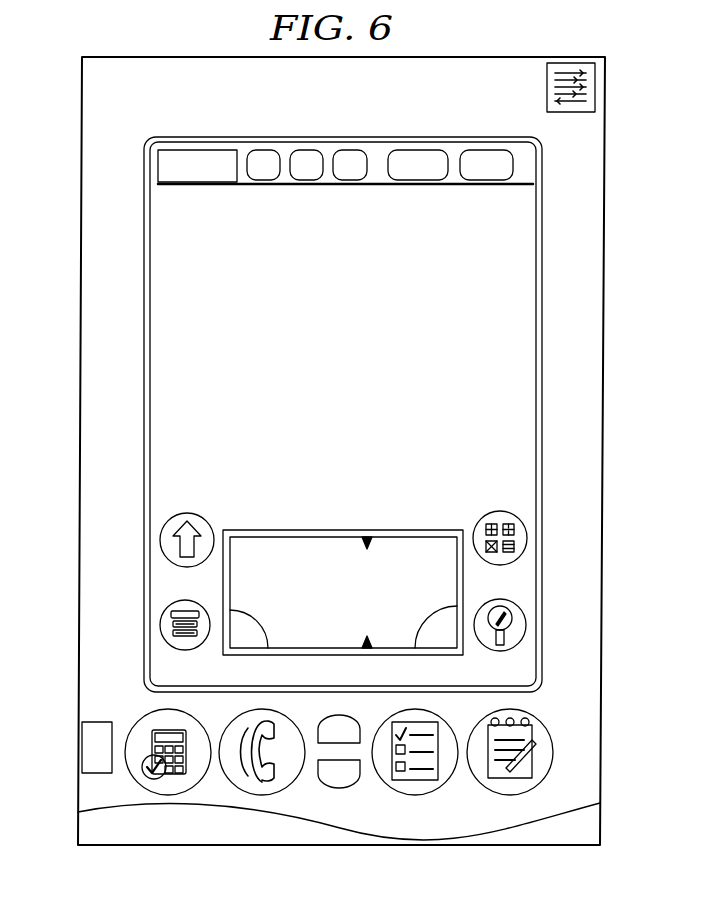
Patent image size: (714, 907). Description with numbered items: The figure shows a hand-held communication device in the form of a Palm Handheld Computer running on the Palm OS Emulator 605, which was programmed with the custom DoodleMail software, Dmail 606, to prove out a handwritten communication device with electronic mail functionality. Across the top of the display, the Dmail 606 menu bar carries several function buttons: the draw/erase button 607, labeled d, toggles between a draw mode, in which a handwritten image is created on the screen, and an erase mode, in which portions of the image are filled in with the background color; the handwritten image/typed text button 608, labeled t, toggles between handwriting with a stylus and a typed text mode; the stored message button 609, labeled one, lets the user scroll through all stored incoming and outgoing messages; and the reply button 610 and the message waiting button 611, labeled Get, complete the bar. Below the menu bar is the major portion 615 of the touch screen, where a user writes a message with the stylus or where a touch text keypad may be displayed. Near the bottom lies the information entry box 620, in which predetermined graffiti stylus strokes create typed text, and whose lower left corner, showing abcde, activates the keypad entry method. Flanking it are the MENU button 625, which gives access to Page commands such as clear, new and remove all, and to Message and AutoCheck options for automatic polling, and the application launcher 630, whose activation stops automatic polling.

The Palm OS Emulator 605 is at (582, 441).
The Dmail application 606 is at (158, 165).
The draw/erase button 607 is at (262, 150).
The handwritten image/typed text button 608 is at (303, 150).
The stored message button 609 is at (345, 150).
The reply button 610 is at (418, 150).
The message waiting button 611 is at (487, 150).
The major portion of the screen 615 is at (505, 489).
The information entry box 620 is at (447, 593).
The MENU button 625 is at (160, 625).
The application launcher 630 is at (160, 539).